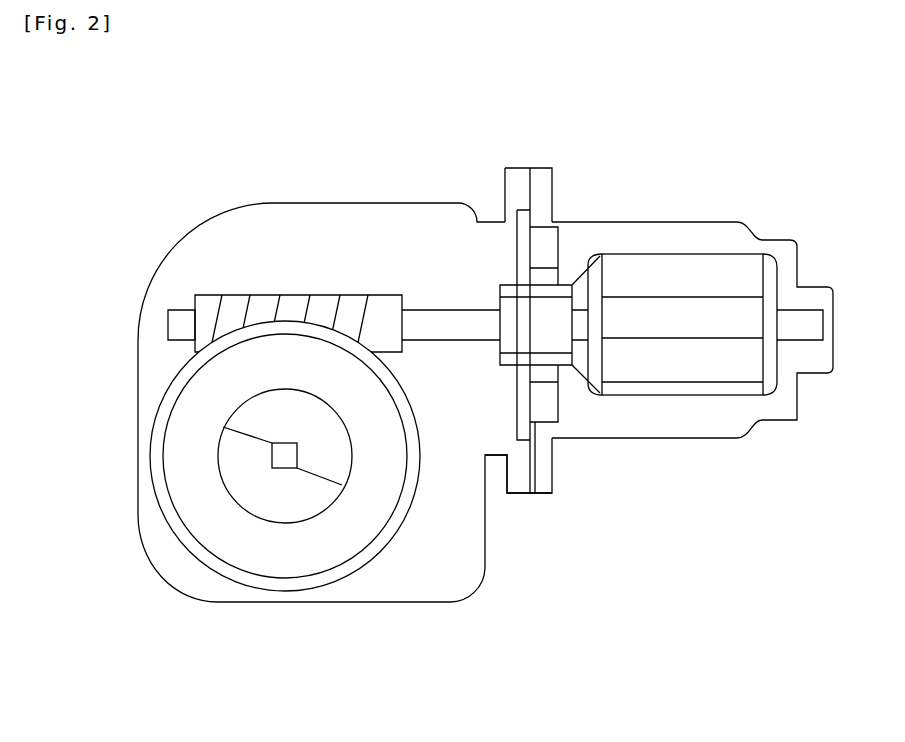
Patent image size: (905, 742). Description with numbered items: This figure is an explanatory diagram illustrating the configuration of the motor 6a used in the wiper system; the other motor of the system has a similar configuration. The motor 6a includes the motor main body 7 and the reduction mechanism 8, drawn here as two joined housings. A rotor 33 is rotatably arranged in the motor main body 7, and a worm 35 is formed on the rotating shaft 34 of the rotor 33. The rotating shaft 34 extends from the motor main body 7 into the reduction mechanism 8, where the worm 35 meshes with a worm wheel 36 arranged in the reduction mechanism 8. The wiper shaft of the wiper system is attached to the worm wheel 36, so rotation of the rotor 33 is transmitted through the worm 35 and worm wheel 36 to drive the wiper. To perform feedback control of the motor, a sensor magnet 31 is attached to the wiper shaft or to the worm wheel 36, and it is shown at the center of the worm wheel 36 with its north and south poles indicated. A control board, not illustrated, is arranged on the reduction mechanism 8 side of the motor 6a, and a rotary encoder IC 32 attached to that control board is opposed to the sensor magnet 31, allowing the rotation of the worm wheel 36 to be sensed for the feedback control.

The reduction mechanism 8 is at (293, 226).
The motor main body 7 is at (657, 235).
The rotating shaft 34 is at (452, 322).
The worm 35 is at (320, 310).
The worm wheel 36 is at (382, 540).
The sensor magnet 31 is at (308, 493).
The rotary encoder IC 32 is at (272, 453).
The rotor 33 is at (657, 368).
The motor 6a is at (568, 548).